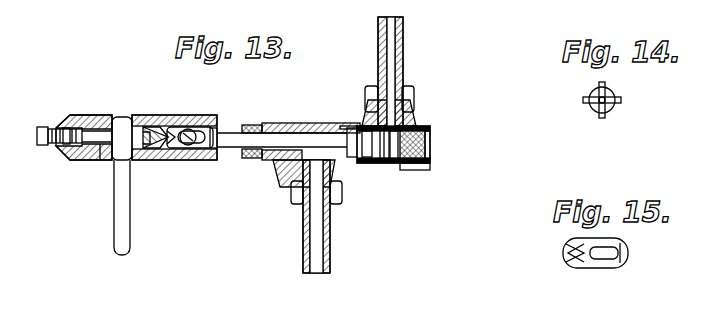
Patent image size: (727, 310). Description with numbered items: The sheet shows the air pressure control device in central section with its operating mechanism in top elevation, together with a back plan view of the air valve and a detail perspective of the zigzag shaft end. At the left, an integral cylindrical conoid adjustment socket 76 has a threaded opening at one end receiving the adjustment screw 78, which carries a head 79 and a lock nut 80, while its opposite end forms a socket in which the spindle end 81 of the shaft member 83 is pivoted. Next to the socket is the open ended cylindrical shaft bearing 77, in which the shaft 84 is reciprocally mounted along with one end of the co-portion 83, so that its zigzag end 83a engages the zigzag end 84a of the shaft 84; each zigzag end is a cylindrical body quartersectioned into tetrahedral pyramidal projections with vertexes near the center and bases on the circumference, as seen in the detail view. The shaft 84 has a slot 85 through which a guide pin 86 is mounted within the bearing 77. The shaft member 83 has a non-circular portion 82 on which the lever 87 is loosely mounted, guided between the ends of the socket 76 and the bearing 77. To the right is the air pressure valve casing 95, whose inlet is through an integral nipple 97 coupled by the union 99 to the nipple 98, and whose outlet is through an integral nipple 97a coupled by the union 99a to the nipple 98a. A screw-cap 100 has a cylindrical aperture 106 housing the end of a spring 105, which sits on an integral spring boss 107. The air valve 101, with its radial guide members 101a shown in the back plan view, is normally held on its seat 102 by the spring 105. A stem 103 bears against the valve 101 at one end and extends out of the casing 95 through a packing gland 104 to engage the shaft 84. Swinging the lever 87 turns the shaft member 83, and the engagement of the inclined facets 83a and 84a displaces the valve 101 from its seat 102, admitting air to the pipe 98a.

In FIG. 13, the cylindrical conoid adjustment socket 76 is at (90, 115).
In FIG. 13, the cylindrical shaft bearing 77 is at (160, 115).
In FIG. 13, the adjustment screw 78 is at (52, 129).
In FIG. 13, the head 79 is at (37, 136).
In FIG. 13, the lock nut 80 is at (66, 128).
In FIG. 13, the spindle end 81 is at (75, 158).
In FIG. 13, the non-circular portion 82 is at (104, 160).
In FIG. 13, the shaft member 83 is at (150, 127).
In FIG. 13, the zigzag end 83a is at (148, 149).
In FIG. 13, the shaft 84 is at (175, 126).
In FIG. 15, the shaft 84 is at (584, 268).
In FIG. 13, the zigzag end 84a is at (176, 149).
In FIG. 15, the zigzag end 84a is at (566, 254).
In FIG. 13, the slot 85 is at (213, 149).
In FIG. 15, the slot 85 is at (616, 268).
In FIG. 13, the guide pin 86 is at (189, 134).
In FIG. 13, the lever 87 is at (122, 117).
In FIG. 13, the air pressure valve casing 95 is at (350, 126).
In FIG. 13, the inlet nipple 97 is at (412, 118).
In FIG. 13, the outlet nipple 97a is at (292, 172).
In FIG. 13, the nipple 98 is at (403, 60).
In FIG. 13, the nipple 98a is at (303, 237).
In FIG. 13, the union 99 is at (412, 95).
In FIG. 13, the union 99a is at (292, 196).
In FIG. 13, the screw-cap 100 is at (430, 142).
In FIG. 13, the air valve 101 is at (370, 163).
In FIG. 14, the air valve 101 is at (592, 108).
In FIG. 13, the radial guide members 101a is at (376, 163).
In FIG. 14, the radial guide members 101a is at (670, 125).
In FIG. 13, the seat 102 is at (350, 128).
In FIG. 13, the stem 103 is at (303, 123).
In FIG. 13, the packing gland 104 is at (275, 125).
In FIG. 13, the spring 105 is at (400, 170).
In FIG. 13, the cylindrical aperture 106 is at (425, 163).
In FIG. 13, the spring boss 107 is at (427, 170).